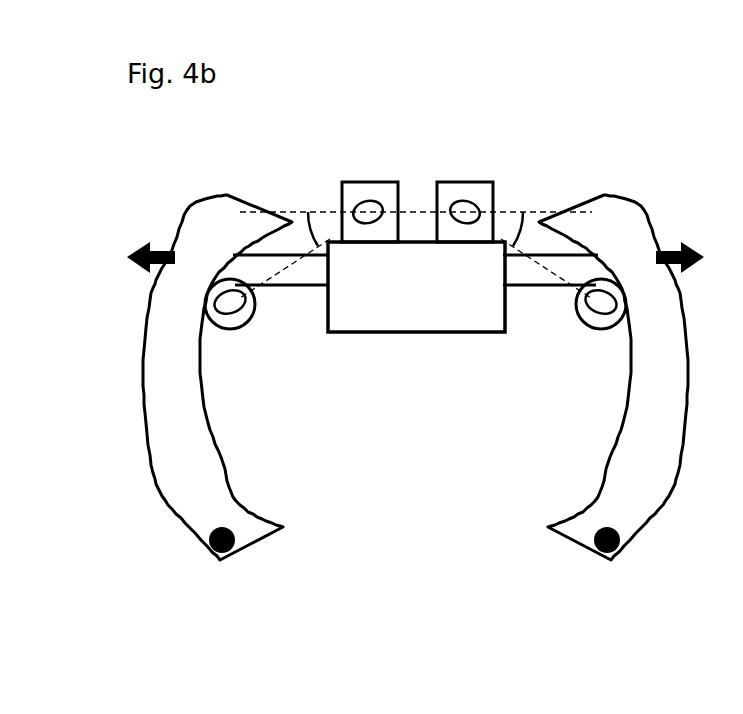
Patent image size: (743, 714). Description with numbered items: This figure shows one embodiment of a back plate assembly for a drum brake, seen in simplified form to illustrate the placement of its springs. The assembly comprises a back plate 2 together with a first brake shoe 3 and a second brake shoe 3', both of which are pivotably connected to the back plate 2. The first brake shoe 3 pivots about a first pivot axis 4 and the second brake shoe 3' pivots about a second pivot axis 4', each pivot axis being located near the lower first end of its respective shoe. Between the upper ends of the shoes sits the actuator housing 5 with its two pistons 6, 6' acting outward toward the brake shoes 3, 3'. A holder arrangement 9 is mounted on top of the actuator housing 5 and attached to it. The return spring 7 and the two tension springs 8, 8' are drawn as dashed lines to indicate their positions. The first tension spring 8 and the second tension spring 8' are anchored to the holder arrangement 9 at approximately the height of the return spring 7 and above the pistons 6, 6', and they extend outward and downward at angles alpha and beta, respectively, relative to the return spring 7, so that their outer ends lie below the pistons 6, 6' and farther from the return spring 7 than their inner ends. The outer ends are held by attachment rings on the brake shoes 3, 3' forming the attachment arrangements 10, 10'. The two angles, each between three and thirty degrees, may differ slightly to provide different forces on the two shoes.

The back plate 2 is at (402, 526).
The first brake shoe 3 is at (193, 358).
The second brake shoe 3' is at (621, 363).
The first pivot axis 4 is at (202, 583).
The second pivot axis 4' is at (619, 576).
The actuator housing 5 is at (427, 300).
The piston 6 is at (281, 289).
The piston 6' is at (549, 291).
The return spring 7 is at (418, 212).
The first tension spring 8 is at (280, 350).
The second tension spring 8' is at (552, 342).
The holder arrangement 9 is at (417, 157).
The attachment arrangement 10 is at (236, 375).
The attachment arrangement 10' is at (595, 372).